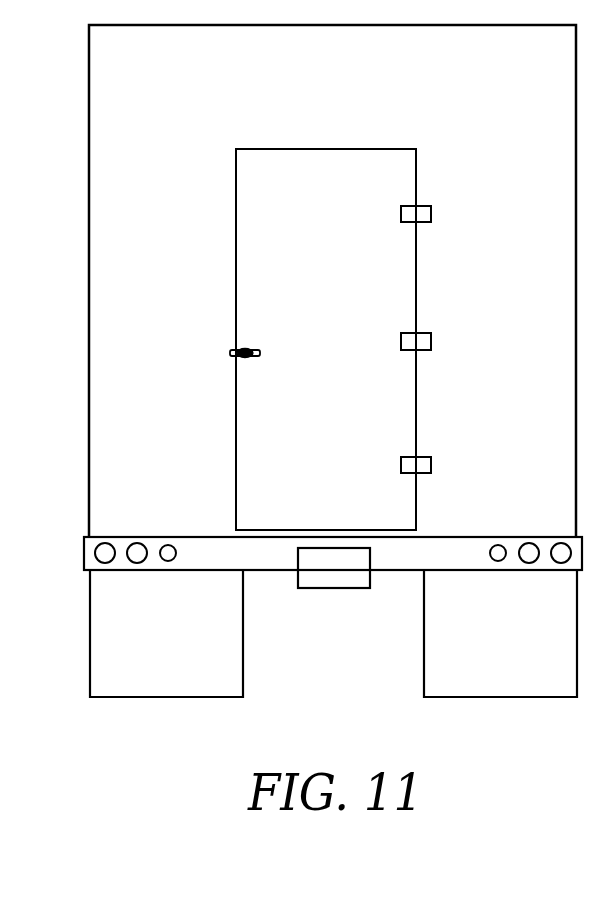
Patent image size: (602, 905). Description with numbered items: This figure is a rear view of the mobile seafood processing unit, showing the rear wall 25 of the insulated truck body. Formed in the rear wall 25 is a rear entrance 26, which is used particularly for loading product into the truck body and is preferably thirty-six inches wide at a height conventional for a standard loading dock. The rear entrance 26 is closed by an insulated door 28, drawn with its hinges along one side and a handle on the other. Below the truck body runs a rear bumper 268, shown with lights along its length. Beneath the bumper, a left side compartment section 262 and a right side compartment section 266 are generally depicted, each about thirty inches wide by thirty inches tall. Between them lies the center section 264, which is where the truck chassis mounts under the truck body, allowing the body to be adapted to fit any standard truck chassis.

The rear wall 25 is at (456, 98).
The rear entrance 26 is at (264, 160).
The insulated door 28 is at (342, 242).
The rear bumper 268 is at (190, 553).
The left side compartment sections 262 is at (185, 654).
The center section 264 is at (355, 648).
The right side compartment section 266 is at (525, 641).